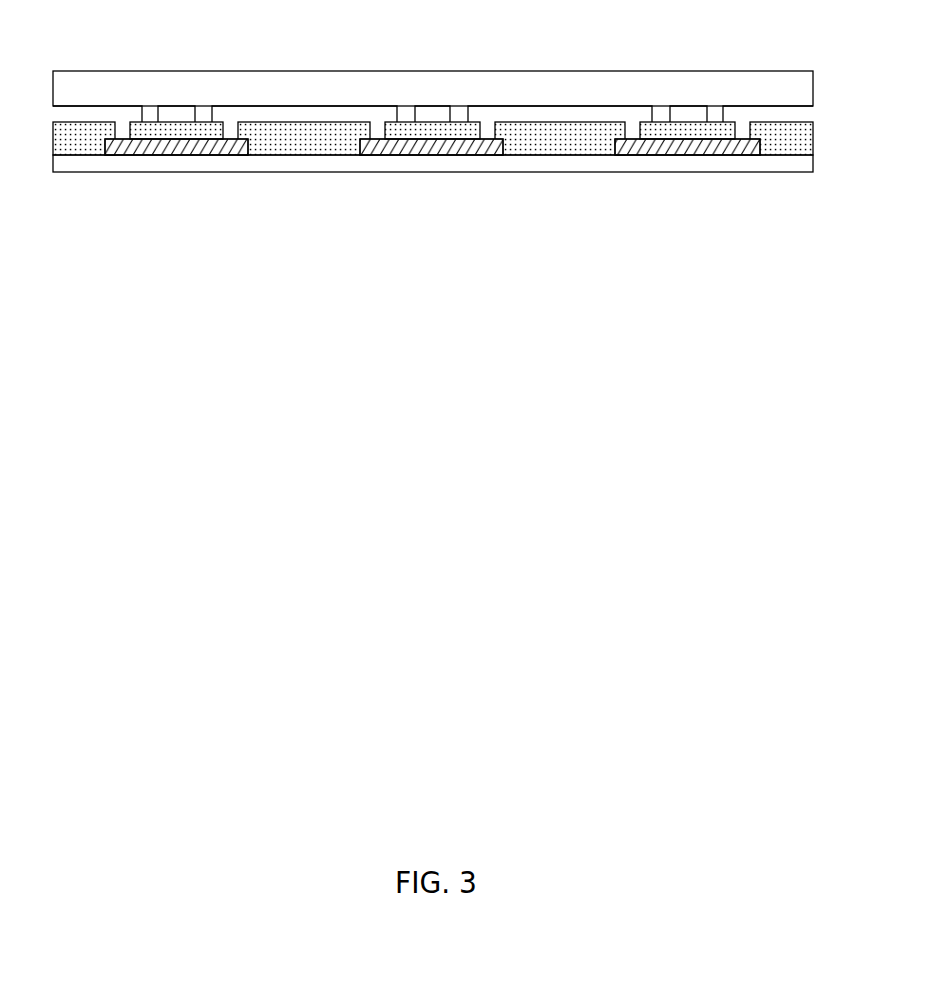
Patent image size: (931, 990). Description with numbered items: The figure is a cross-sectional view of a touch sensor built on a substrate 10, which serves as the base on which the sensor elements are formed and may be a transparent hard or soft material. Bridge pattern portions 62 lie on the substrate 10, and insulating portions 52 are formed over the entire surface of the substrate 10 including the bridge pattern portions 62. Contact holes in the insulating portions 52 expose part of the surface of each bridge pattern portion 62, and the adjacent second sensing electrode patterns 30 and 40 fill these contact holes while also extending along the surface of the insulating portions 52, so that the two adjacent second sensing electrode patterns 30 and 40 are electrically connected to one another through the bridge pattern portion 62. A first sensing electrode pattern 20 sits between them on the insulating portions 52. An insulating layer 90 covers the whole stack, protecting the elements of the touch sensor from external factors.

The substrate 10 is at (778, 163).
The first sensing electrode pattern 20 is at (428, 112).
The second sensing electrode pattern 30 is at (311, 112).
The second sensing electrode pattern 40 is at (569, 112).
The insulating portion 52 is at (405, 131).
The bridge pattern portion 62 is at (460, 147).
The insulating layer 90 is at (778, 80).